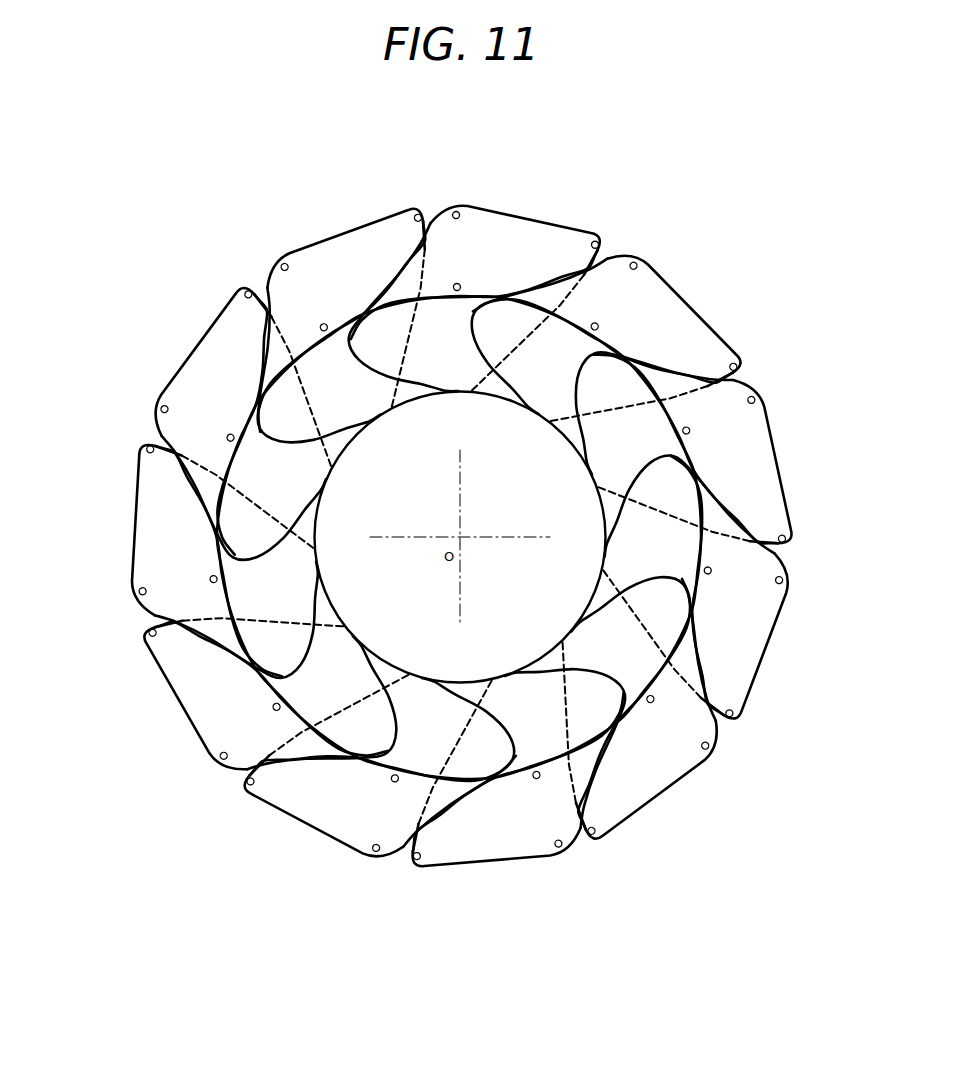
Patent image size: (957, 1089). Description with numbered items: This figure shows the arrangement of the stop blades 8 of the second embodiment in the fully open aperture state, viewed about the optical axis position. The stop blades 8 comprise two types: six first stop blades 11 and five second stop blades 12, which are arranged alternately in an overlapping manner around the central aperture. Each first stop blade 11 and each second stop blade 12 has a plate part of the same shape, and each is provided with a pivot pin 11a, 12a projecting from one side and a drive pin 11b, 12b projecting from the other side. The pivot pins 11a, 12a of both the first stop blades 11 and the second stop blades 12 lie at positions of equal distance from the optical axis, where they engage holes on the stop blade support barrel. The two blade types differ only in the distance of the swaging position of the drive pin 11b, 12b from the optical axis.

The stop blades 8 is at (698, 190).
The first stop blade 11 is at (208, 350).
The pivot pin 11a is at (248, 290).
The drive pin 11b is at (458, 210).
The second stop blade 12 is at (345, 240).
The pivot pin 12a is at (416, 213).
The drive pin 12b is at (321, 324).